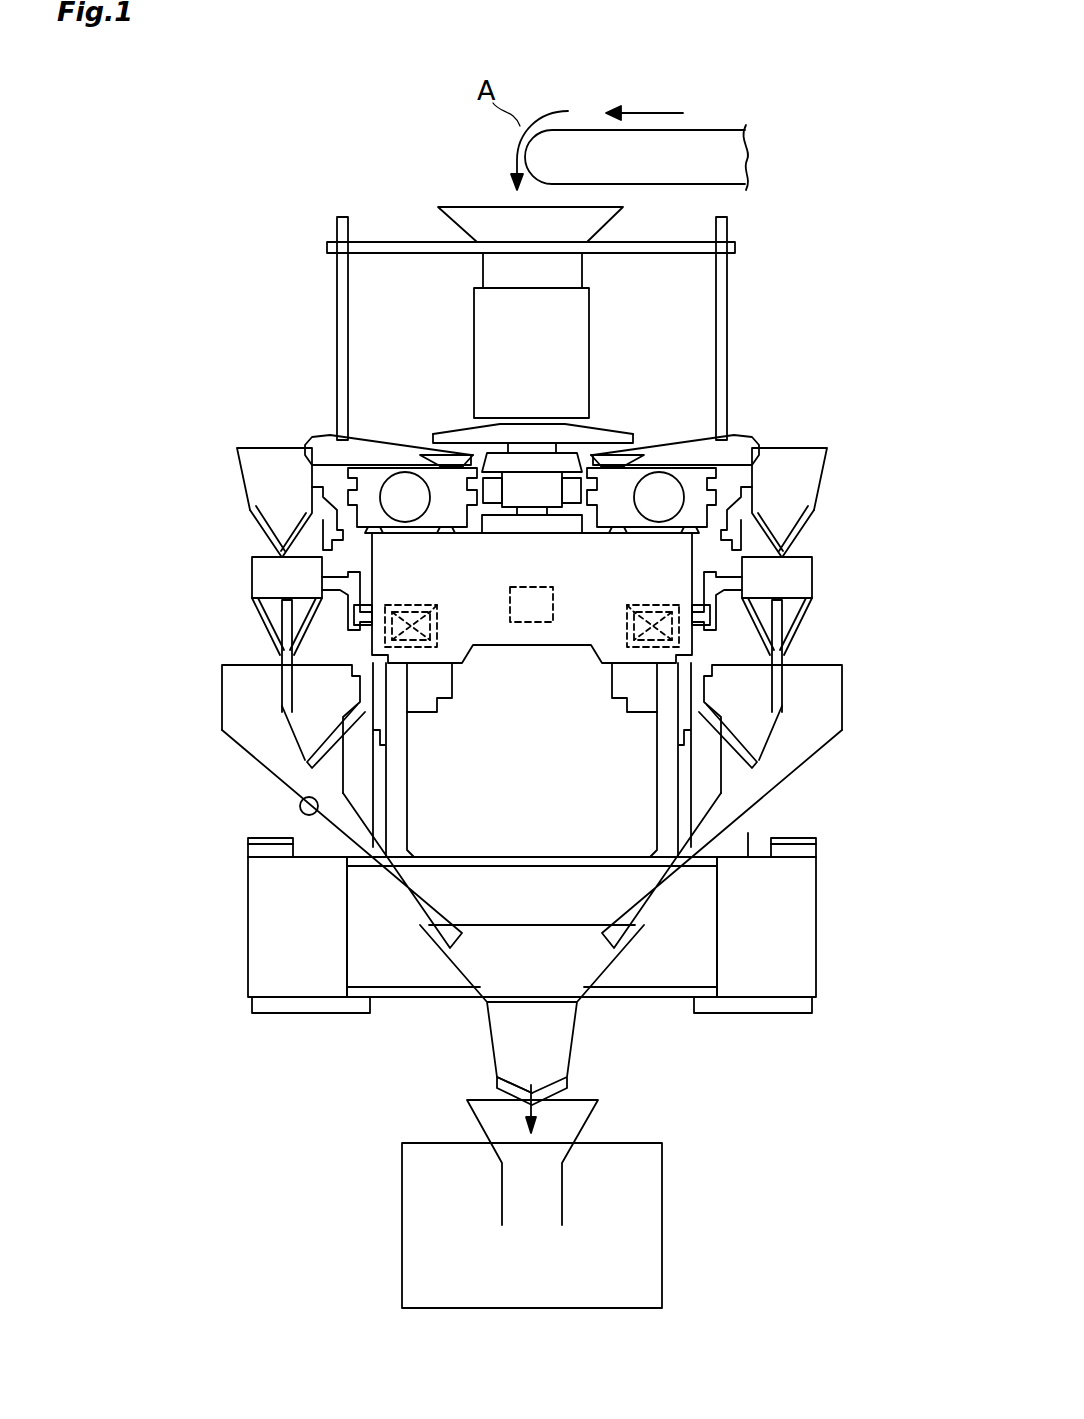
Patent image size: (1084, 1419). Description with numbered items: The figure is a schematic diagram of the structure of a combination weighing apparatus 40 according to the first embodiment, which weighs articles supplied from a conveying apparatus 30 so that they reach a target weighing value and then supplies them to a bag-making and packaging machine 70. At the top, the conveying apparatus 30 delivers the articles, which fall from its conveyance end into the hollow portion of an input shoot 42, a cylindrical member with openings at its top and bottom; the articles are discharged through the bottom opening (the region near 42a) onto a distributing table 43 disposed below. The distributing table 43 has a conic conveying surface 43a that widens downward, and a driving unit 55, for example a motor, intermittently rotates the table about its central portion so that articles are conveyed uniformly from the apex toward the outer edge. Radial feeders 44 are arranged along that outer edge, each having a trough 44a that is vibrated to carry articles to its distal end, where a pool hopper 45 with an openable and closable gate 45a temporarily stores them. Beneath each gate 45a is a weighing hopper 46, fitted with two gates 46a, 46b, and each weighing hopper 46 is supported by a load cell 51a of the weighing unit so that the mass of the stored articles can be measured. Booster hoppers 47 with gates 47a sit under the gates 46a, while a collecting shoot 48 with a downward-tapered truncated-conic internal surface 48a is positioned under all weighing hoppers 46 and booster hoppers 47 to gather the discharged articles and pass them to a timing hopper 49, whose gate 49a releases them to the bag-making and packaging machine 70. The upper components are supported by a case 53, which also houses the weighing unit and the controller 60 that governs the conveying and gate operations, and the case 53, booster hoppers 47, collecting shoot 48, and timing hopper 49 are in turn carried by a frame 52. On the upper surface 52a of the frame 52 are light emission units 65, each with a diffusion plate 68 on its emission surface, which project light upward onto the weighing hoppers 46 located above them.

The conveying apparatus 30 is at (705, 148).
The combination weighing apparatus 40 is at (275, 112).
The input shoot 42 is at (473, 215).
The charging chute outlet 42a is at (546, 425).
The distributing table 43 is at (581, 437).
The conveying surface 43a is at (440, 430).
The radial feeder 44 is at (310, 437).
The trough 44a is at (353, 437).
The pool hopper 45 is at (245, 470).
The gate 45a is at (258, 535).
The weighing hopper 46 is at (255, 580).
The gate 46a is at (294, 651).
The gate 46b is at (268, 630).
The booster hopper 47 is at (285, 690).
The gate 47a is at (318, 750).
The collecting shoot 48 is at (268, 768).
The internal surface 48a is at (300, 810).
The timing hopper 49 is at (557, 1052).
The gate 49a is at (527, 1103).
The load cell 51a is at (440, 602).
The frame 52 is at (800, 910).
The upper surface 52a is at (748, 835).
The case 53 is at (543, 628).
The driving unit 55 is at (596, 455).
The controller 60 is at (518, 630).
The light emission unit 65 is at (250, 857).
The diffusion plate 68 is at (268, 840).
The bag-making and packaging machine 70 is at (645, 1210).